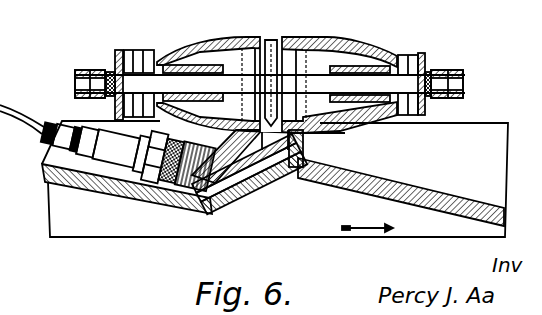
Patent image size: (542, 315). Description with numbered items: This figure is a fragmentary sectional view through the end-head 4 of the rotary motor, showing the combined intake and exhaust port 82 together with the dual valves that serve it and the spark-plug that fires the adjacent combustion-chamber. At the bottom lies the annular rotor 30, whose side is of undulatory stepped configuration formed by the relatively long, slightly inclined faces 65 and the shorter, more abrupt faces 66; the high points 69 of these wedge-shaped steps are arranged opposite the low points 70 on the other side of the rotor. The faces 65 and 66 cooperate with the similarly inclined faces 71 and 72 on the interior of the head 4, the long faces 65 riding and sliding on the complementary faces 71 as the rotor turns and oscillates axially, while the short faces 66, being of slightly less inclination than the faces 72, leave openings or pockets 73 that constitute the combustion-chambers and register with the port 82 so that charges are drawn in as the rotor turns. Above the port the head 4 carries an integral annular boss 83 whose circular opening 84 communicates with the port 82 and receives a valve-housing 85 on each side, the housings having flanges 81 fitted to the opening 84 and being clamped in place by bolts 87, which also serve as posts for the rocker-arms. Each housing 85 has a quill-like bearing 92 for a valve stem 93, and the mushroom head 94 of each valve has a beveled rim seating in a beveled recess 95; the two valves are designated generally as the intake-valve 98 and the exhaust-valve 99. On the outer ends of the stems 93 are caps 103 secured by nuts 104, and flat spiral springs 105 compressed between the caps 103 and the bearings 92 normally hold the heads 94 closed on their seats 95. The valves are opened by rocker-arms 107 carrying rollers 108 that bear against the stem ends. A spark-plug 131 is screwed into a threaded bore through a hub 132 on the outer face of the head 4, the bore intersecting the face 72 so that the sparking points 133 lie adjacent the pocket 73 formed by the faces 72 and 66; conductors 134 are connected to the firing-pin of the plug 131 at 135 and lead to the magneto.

The end-head 4 is at (500, 127).
The annular rotor 30 is at (278, 180).
The long inclined faces 65 is at (430, 209).
The short inclined faces 66 is at (247, 208).
The high points 69 is at (304, 176).
The low points 70 is at (218, 207).
The inclined faces 71 is at (422, 192).
The inclined faces 72 is at (246, 212).
The pockets 73 is at (262, 180).
The flanges 81 is at (299, 42).
The port 82 is at (304, 150).
The annular bosses 83 is at (285, 36).
The circular openings 84 is at (271, 42).
The valve-housings 85 is at (196, 54).
The bolts 87 is at (257, 42).
The quill-like bearings 92 is at (182, 62).
The valve stems 93 is at (270, 83).
The mushroom heads 94 is at (240, 154).
The beveled recesses 95 is at (254, 38).
The intake-valve 98 is at (284, 68).
The exhaust-valve 99 is at (266, 36).
The caps 103 is at (119, 52).
The nuts 104 is at (111, 70).
The flat spiral springs 105 is at (141, 56).
The rocker-arms 107 is at (90, 56).
The rollers 108 is at (76, 84).
The spark-plugs 131 is at (129, 141).
The bosses or hubs 132 is at (181, 151).
The sparking points 133 is at (271, 219).
The conductors 134 is at (33, 124).
The connection point 135 is at (64, 158).